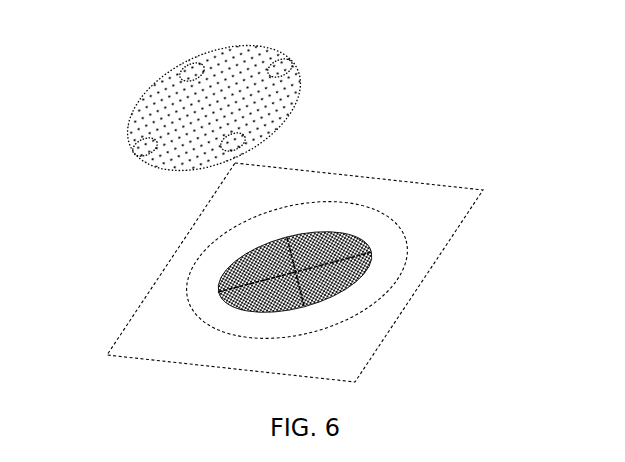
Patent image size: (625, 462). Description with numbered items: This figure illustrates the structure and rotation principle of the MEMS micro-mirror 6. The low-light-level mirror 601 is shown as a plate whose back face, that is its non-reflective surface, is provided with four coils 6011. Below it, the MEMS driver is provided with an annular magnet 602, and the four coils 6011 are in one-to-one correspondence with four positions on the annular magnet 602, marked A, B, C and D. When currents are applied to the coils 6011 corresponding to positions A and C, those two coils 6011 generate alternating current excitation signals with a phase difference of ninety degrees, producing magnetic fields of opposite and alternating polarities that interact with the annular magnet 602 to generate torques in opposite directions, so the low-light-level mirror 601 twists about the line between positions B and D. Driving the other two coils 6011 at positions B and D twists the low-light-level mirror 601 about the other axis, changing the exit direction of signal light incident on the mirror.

The MEMS micro-mirror 6 is at (108, 63).
The low-light-level mirror 601 is at (238, 123).
The coils 6011 is at (150, 143).
The annular magnet 602 is at (362, 283).